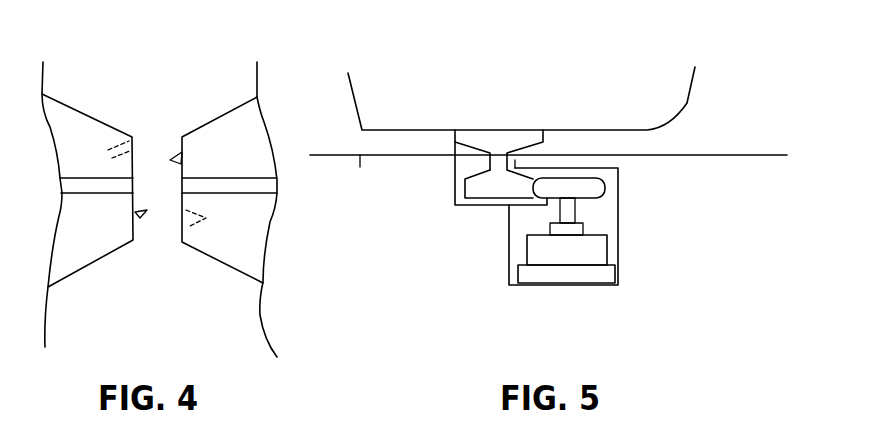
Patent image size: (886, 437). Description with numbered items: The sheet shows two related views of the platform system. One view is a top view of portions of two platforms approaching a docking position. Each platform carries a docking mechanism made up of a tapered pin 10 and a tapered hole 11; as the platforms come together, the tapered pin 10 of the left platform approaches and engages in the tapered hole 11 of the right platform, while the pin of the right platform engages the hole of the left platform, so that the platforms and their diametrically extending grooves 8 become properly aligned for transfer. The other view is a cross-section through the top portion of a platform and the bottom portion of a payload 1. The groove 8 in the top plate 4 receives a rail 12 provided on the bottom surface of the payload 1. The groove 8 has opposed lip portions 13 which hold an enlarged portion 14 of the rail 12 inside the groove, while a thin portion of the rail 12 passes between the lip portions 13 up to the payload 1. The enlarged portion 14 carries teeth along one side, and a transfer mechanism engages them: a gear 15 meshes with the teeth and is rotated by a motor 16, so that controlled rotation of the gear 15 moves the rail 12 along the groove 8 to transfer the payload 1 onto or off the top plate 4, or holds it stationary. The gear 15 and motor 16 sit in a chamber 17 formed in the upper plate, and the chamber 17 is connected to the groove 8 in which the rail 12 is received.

In FIG. 5, the payload 1 is at (692, 102).
In FIG. 5, the top plate 4 is at (643, 157).
In FIG. 4, the groove 8 is at (80, 195).
In FIG. 5, the groove 8 is at (452, 202).
In FIG. 4, the tapered pin 10 is at (177, 167).
In FIG. 4, the tapered hole 11 is at (118, 150).
In FIG. 5, the rail 12 is at (453, 136).
In FIG. 5, the lip portions 13 is at (487, 160).
In FIG. 5, the enlarged portion 14 is at (532, 188).
In FIG. 5, the gear 15 is at (593, 193).
In FIG. 5, the motor 16 is at (587, 253).
In FIG. 5, the chamber 17 is at (620, 237).